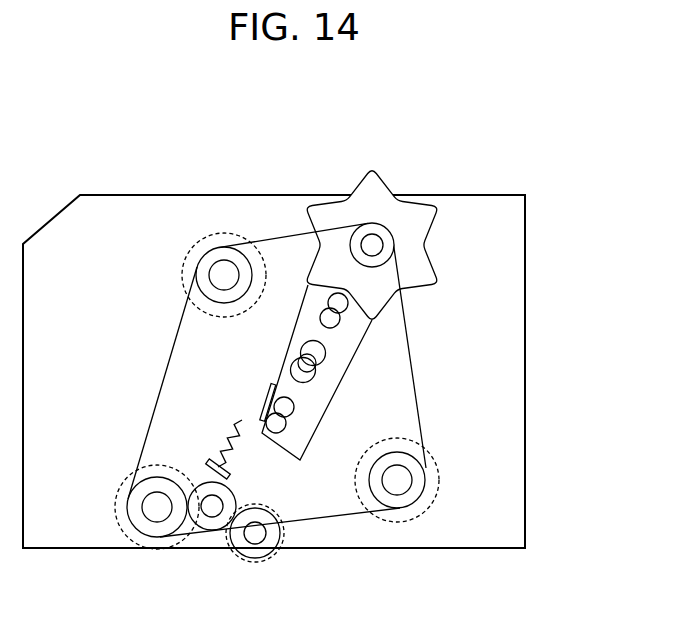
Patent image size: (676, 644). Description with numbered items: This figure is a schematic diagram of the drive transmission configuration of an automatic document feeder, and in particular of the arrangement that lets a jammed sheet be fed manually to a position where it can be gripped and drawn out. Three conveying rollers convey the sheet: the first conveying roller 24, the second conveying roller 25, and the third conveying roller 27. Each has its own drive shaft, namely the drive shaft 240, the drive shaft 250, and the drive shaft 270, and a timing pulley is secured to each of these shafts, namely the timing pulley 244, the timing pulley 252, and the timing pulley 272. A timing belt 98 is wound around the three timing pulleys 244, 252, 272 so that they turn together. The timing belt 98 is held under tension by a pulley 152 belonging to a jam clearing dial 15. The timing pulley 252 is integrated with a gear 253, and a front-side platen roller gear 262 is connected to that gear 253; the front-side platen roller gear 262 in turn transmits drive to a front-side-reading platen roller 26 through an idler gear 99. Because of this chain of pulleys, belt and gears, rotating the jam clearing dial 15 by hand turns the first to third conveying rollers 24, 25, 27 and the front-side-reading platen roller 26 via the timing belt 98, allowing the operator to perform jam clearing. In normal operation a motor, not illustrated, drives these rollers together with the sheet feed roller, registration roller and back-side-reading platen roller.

The jam clearing dial 15 is at (444, 229).
The pulley 152 is at (390, 260).
The timing belt 98 is at (410, 347).
The first conveying roller 24 is at (194, 240).
The drive shaft 240 is at (227, 268).
The timing pulley 244 is at (184, 228).
The second conveying roller 25 is at (113, 508).
The drive shaft 250 is at (157, 515).
The timing pulley 252 is at (143, 555).
The gear 253 is at (133, 518).
The idler gear 99 is at (203, 480).
The front-side-reading platen roller 26 is at (268, 562).
The front-side platen roller gear 262 is at (245, 550).
The third conveying roller 27 is at (437, 478).
The drive shaft 270 is at (398, 476).
The timing pulley 272 is at (410, 497).